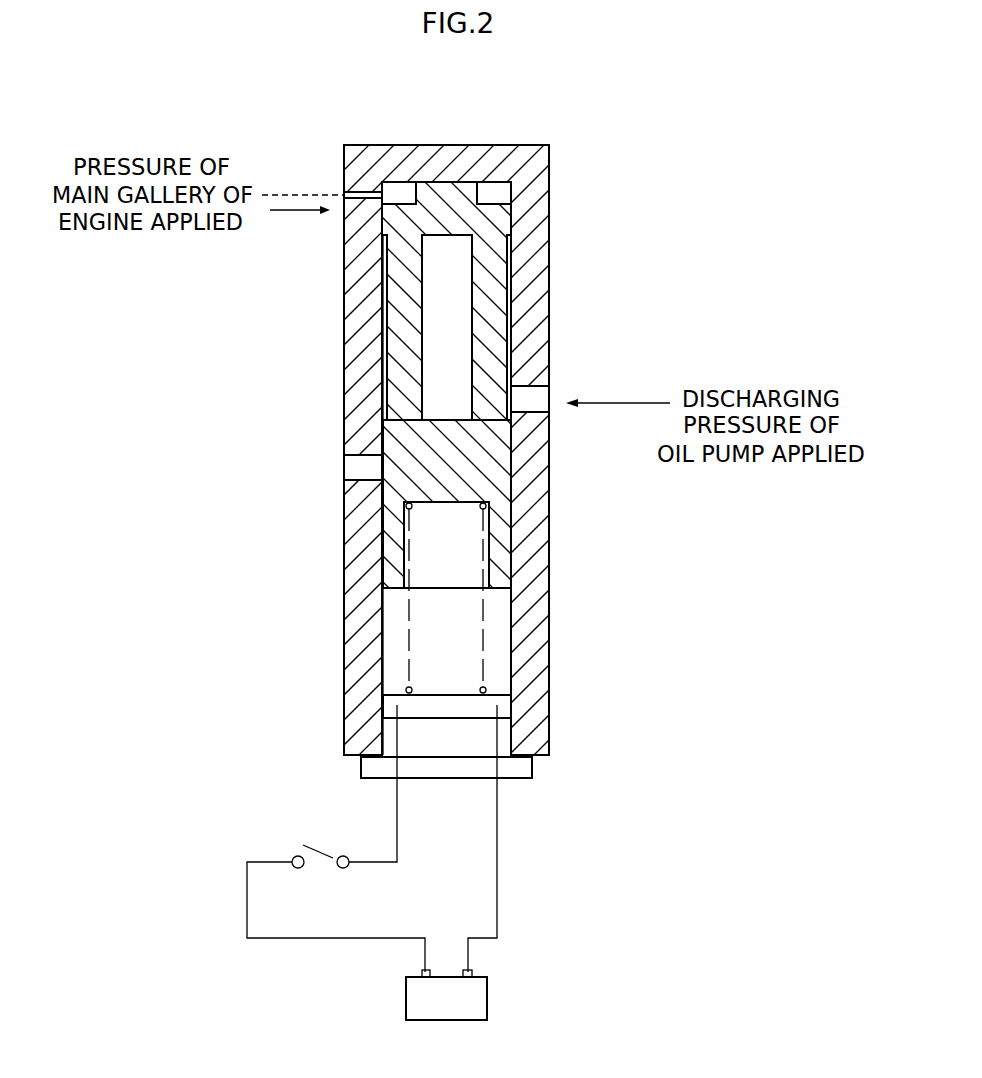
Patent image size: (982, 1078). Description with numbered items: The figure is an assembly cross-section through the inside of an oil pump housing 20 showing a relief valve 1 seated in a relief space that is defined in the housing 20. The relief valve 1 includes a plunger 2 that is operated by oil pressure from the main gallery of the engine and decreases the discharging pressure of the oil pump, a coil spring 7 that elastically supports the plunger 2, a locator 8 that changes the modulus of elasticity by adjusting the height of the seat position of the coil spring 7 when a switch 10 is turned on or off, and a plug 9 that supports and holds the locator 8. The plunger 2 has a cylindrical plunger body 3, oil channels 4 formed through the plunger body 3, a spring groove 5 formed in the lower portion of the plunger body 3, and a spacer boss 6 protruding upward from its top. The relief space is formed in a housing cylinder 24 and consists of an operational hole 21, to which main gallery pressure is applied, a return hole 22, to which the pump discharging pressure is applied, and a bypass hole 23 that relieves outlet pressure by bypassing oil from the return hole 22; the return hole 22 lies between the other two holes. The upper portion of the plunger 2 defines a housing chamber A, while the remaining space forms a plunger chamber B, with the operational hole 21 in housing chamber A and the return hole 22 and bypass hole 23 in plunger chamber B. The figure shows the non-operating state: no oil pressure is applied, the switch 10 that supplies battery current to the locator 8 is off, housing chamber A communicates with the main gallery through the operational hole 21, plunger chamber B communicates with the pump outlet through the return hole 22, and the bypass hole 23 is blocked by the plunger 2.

The relief valve 1 is at (520, 814).
The plunger 2 is at (454, 385).
The plunger body 3 is at (620, 190).
The oil channels 4 is at (456, 312).
The spring groove 5 is at (443, 506).
The spacer boss 6 is at (473, 192).
The coil spring 7 is at (483, 608).
The locator 8 is at (450, 697).
The plug 9 is at (515, 770).
The switch 10 is at (318, 848).
The housing 20 is at (455, 150).
The operational hole 21 is at (362, 192).
The return hole 22 is at (530, 403).
The bypass hole 23 is at (362, 455).
The housing cylinder 24 is at (383, 624).
The housing chamber A is at (399, 190).
The plunger chamber B is at (383, 280).